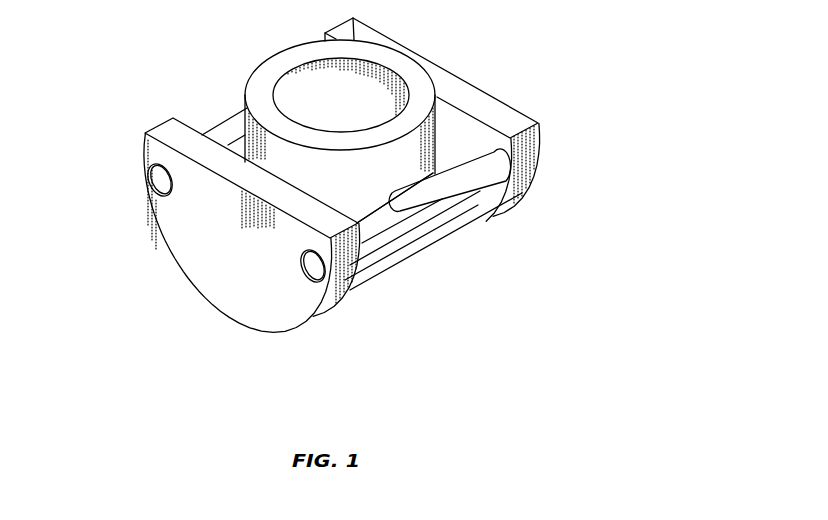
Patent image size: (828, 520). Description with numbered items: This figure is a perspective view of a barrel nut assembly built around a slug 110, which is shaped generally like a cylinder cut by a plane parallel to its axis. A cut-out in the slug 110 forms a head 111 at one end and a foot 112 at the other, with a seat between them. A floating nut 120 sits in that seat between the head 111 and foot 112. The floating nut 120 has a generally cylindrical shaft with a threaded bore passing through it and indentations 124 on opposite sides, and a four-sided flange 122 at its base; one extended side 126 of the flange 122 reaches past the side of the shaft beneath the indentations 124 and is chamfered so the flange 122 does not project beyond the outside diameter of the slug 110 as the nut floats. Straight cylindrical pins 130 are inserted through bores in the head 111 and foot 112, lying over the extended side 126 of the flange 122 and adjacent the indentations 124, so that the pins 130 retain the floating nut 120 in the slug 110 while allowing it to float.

The slug 110 is at (249, 248).
The head 111 is at (472, 99).
The foot 112 is at (145, 132).
The floating nut 120 is at (391, 180).
The flange 122 is at (490, 201).
The indentations 124 is at (405, 200).
The extended side of flange 126 is at (445, 226).
The pins 130 is at (246, 136).